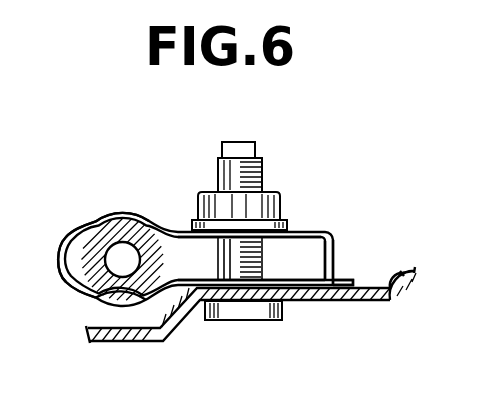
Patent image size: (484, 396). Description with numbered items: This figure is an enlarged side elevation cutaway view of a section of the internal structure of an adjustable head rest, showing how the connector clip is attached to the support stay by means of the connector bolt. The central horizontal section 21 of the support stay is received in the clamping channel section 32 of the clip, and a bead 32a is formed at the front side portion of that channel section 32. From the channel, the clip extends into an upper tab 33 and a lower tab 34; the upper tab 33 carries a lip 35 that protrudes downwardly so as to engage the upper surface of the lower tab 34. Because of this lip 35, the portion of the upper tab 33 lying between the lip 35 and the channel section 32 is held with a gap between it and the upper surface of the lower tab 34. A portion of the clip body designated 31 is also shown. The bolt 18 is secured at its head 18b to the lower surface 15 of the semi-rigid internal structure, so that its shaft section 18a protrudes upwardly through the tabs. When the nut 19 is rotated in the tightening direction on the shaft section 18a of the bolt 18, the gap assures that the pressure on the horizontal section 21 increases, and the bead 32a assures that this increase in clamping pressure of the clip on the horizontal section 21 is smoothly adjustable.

The lower surface 15 is at (406, 293).
The bolt 18 is at (306, 309).
The shaft section 18a is at (262, 172).
The head 18b is at (264, 313).
The nut 19 is at (275, 207).
The horizontal section 21 is at (122, 227).
The bracket arm 31 is at (188, 263).
The channel section 32 is at (98, 226).
The bead 32a is at (60, 268).
The upper tab 33 is at (322, 227).
The lower tab 34 is at (338, 302).
The lip 35 is at (341, 262).